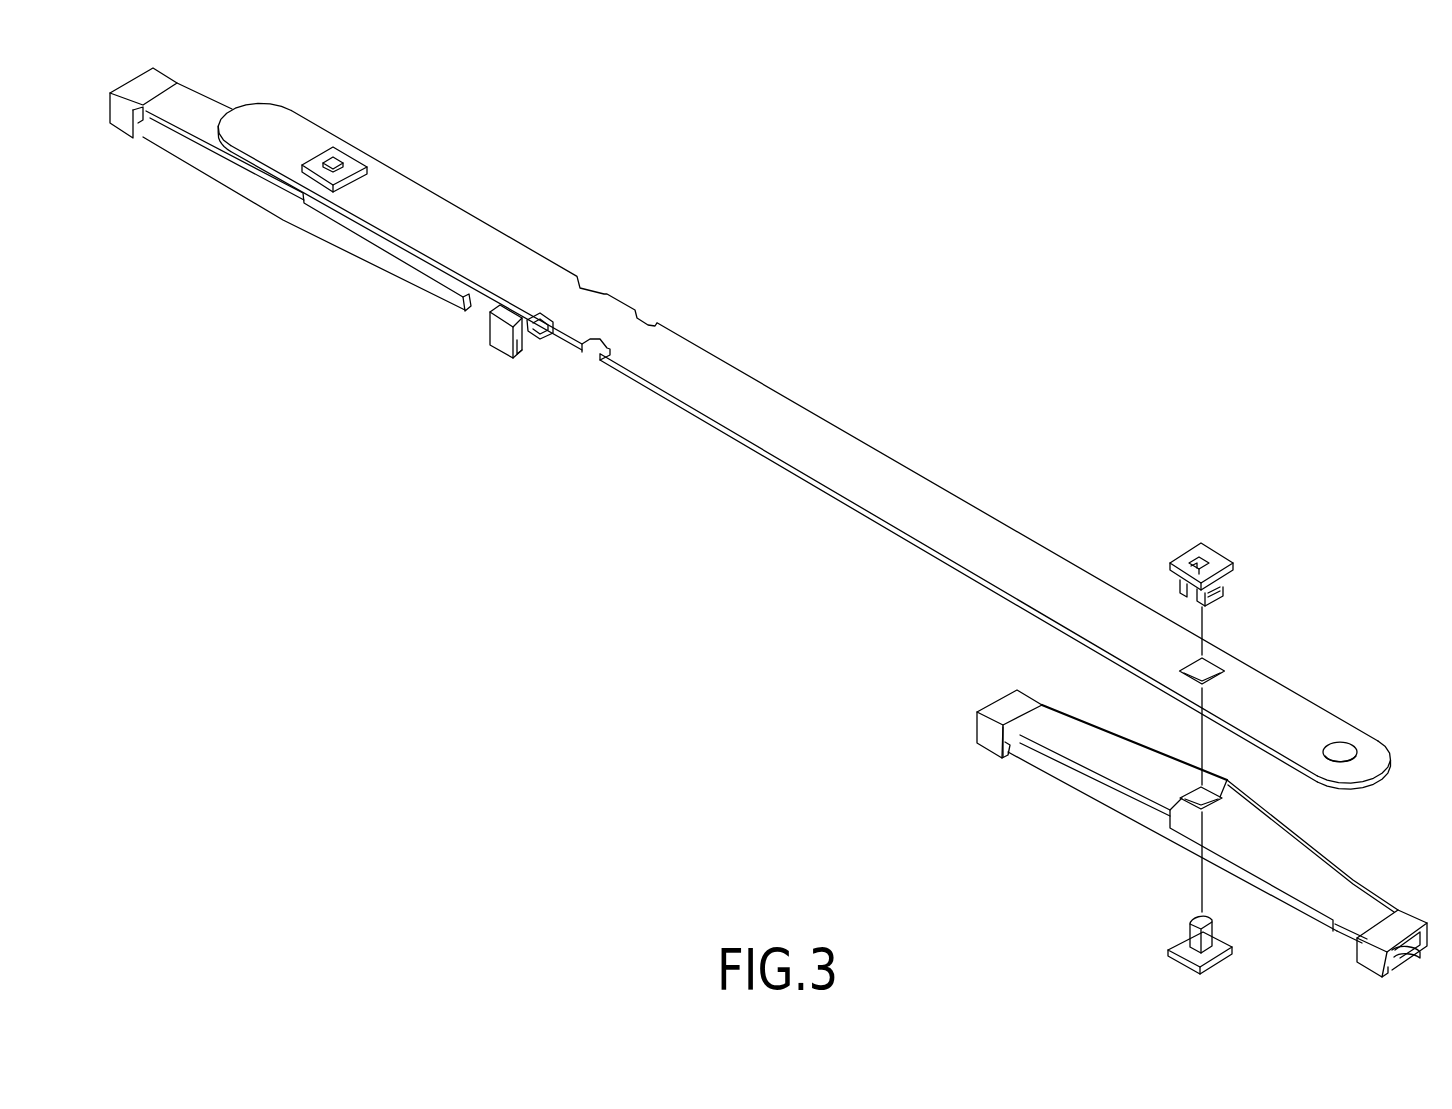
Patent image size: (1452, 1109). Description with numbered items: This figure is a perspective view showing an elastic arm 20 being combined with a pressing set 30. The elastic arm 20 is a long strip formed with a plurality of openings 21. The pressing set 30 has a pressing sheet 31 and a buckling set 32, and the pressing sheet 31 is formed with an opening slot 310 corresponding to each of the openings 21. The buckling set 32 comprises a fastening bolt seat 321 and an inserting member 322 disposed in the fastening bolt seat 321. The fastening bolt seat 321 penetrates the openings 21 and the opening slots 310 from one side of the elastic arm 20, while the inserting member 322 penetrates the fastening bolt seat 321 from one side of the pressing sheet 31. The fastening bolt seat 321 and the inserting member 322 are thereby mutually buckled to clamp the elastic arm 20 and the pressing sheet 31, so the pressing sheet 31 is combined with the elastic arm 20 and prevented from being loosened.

The elastic arm 20 is at (801, 430).
The opening 21 is at (1213, 667).
The pressing set 30 is at (506, 150).
The pressing sheet 31 is at (416, 273).
The buckling set 32 is at (346, 154).
The opening slot 310 is at (1200, 788).
The fastening bolt seat 321 is at (1224, 556).
The inserting member 322 is at (1180, 940).